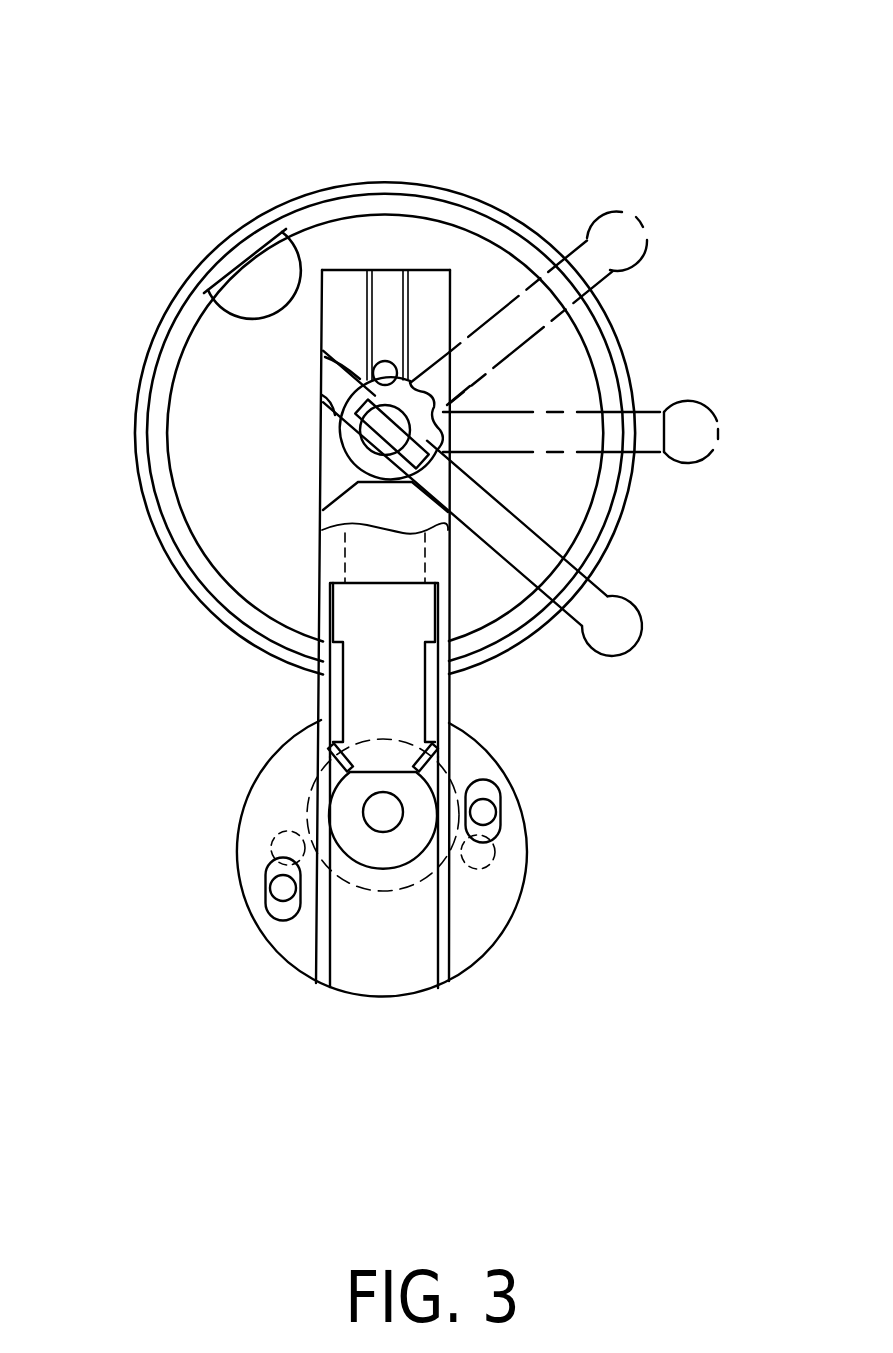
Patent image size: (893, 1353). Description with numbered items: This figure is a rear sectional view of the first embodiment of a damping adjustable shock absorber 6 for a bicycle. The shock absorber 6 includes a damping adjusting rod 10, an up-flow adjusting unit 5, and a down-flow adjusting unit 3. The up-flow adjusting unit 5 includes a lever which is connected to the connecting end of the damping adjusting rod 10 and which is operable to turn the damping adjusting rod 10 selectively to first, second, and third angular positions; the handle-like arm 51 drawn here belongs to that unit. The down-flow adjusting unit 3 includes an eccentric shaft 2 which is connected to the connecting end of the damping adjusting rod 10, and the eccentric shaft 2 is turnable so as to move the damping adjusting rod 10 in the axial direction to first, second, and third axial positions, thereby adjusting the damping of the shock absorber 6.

The damping adjustable shock absorber 6 is at (398, 163).
The up-flow adjusting unit 5 is at (283, 456).
The damping adjusting rod 10 is at (330, 475).
The handle arm 51 is at (527, 538).
The eccentric shaft 2 is at (300, 589).
The down-flow adjusting unit 3 is at (213, 854).